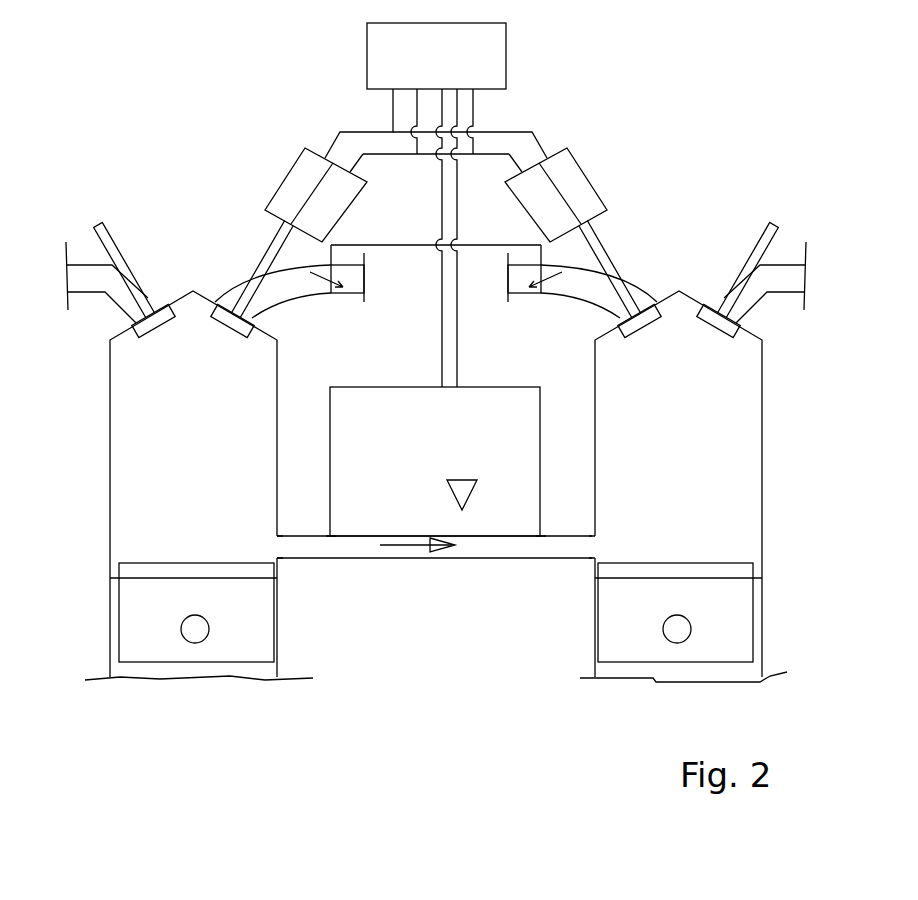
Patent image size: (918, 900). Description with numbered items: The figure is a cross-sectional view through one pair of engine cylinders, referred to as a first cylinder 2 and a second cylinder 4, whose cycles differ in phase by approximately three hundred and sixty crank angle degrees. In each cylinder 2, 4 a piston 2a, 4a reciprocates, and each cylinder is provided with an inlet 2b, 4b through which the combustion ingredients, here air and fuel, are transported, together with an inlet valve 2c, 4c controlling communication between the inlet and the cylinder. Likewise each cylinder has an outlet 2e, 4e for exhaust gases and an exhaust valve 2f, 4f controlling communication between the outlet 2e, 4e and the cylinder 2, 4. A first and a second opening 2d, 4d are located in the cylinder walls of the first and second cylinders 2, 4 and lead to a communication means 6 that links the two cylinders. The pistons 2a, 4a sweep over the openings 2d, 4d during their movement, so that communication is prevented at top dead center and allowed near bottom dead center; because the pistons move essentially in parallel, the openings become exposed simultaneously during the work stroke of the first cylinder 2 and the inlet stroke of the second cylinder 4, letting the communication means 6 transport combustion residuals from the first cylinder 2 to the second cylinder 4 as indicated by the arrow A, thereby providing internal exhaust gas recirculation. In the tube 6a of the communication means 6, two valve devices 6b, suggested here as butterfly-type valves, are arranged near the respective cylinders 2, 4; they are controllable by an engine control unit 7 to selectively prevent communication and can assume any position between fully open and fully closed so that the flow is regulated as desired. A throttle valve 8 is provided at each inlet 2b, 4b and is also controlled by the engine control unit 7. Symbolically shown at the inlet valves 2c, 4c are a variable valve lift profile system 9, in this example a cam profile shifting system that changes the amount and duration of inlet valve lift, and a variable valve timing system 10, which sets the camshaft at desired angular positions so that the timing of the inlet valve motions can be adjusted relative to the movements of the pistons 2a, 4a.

The first cylinder 2 is at (200, 465).
The piston 2a is at (257, 625).
The inlet 2b is at (277, 308).
The inlet valve 2c is at (215, 325).
The first opening 2d is at (277, 537).
The outlet 2e is at (103, 300).
The exhaust valve 2f is at (145, 338).
The second cylinder 4 is at (682, 482).
The piston 4a is at (608, 628).
The inlet 4b is at (595, 308).
The inlet valve 4c is at (657, 325).
The second opening 4d is at (627, 528).
The outlet 4e is at (769, 300).
The exhaust valve 4f is at (700, 330).
The communication means 6 is at (462, 508).
The tube 6a is at (462, 560).
The valve device 6b is at (331, 544).
The engine control unit 7 is at (445, 74).
The throttle valve 8 is at (334, 300).
The variable valve lift profile system 9 is at (278, 177).
The variable valve timing system 10 is at (349, 207).
The arrow A is at (412, 550).